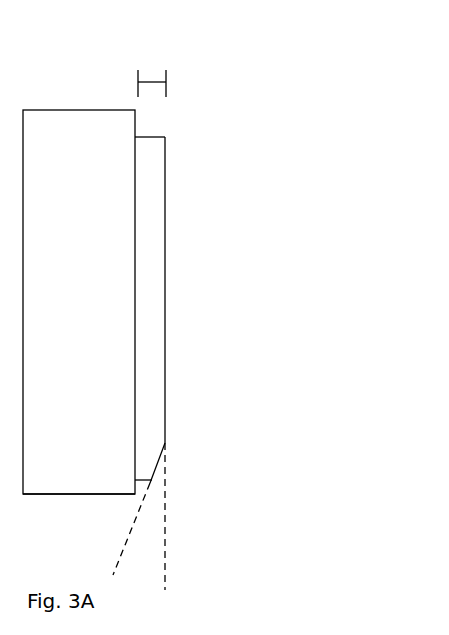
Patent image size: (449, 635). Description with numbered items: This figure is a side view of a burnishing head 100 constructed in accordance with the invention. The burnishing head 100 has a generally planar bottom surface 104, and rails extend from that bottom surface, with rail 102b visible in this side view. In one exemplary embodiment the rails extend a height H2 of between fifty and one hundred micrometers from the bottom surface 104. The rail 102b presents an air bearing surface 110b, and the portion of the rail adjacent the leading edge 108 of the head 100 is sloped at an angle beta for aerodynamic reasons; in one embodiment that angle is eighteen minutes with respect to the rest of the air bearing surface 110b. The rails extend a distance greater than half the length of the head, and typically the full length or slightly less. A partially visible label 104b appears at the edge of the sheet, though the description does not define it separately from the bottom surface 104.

The burnishing head 100 is at (83, 85).
The rail 102b is at (190, 143).
The bottom surface 104 is at (137, 248).
The bond layer portion 104b is at (13, 49).
The leading edge 108 is at (68, 494).
The air bearing surface 110b is at (165, 317).
The height H2 is at (150, 80).